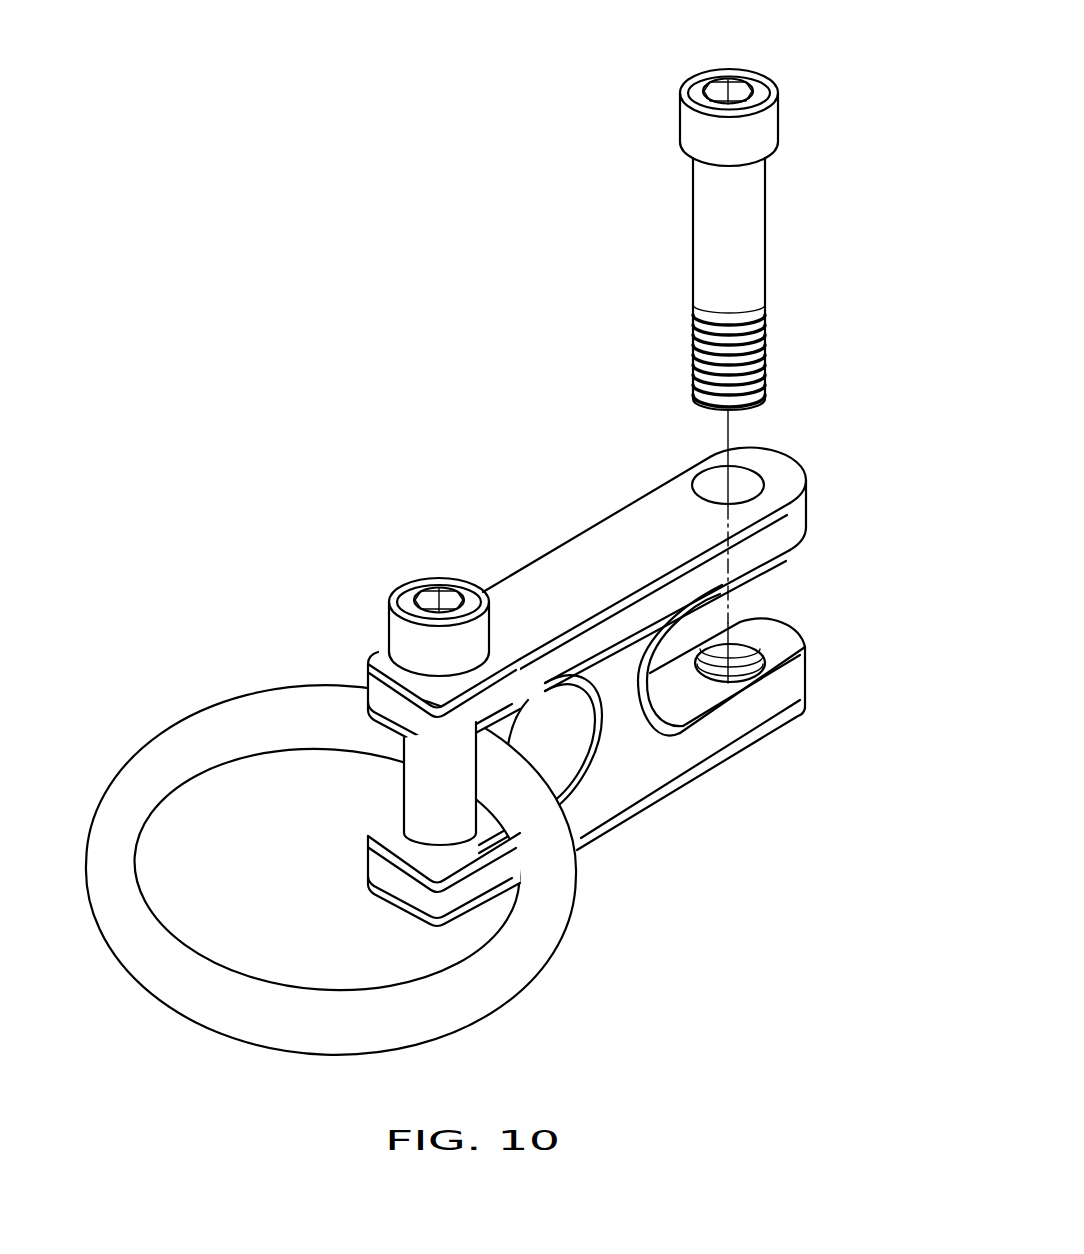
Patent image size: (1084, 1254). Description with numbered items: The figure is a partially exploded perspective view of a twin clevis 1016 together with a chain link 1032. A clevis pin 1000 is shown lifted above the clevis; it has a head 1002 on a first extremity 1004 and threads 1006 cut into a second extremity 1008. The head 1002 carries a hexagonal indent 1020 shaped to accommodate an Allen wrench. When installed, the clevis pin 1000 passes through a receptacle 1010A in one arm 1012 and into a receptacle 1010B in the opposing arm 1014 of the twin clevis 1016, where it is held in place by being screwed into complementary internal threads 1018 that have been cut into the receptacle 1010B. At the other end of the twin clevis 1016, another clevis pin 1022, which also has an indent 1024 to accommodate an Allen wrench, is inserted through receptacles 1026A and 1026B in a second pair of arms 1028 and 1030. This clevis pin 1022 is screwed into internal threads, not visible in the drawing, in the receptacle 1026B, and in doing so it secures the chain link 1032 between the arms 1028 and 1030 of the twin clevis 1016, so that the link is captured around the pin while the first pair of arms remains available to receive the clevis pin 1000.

The clevis pin 1000 is at (768, 208).
The head 1002 is at (780, 112).
The first extremity 1004 is at (693, 157).
The threads 1006 is at (688, 345).
The second extremity 1008 is at (760, 405).
The receptacle 1010A is at (760, 472).
The receptacle 1010B is at (764, 657).
The arm 1012 is at (810, 497).
The arm 1014 is at (808, 695).
The twin clevis 1016 is at (638, 500).
The internal threads 1018 is at (748, 640).
The hexagonal indent 1020 is at (733, 78).
The clevis pin 1022 is at (403, 775).
The indent 1024 is at (441, 580).
The receptacle 1026A is at (378, 660).
The receptacle 1026B is at (370, 840).
The arm 1028 is at (368, 690).
The arm 1030 is at (368, 893).
The chain link 1032 is at (541, 966).